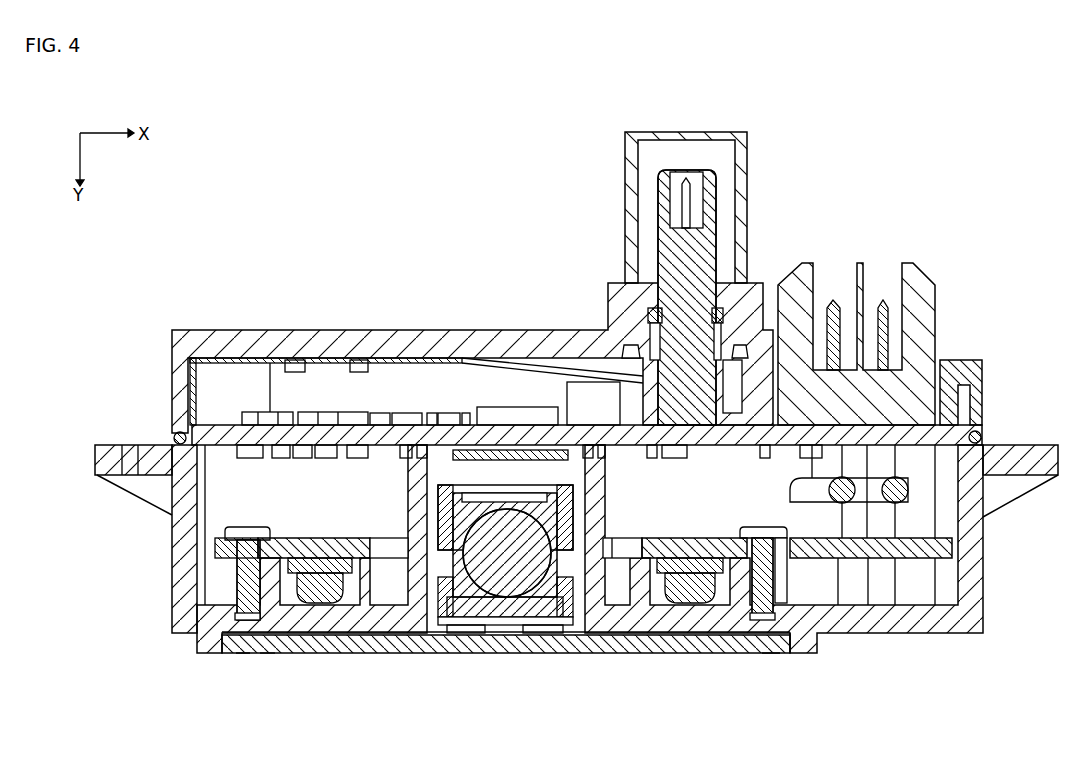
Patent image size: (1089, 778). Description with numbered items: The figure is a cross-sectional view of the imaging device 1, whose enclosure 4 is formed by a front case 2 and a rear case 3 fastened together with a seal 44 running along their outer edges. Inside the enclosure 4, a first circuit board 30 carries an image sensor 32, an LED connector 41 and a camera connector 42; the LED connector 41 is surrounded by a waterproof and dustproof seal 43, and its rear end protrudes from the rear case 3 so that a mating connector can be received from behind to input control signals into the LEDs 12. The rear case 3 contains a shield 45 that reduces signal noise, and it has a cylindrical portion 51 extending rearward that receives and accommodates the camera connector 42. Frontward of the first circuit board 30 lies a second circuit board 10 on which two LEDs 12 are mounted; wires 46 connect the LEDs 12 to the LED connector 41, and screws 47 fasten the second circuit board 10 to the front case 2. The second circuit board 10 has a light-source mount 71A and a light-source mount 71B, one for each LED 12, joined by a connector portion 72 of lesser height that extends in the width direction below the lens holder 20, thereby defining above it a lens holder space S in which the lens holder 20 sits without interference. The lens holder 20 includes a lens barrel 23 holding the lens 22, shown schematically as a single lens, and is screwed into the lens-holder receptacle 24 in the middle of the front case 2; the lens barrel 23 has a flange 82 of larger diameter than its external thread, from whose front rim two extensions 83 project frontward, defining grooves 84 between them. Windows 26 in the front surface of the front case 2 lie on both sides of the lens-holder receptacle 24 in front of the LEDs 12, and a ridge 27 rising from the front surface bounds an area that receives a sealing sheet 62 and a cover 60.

The imaging device 1 is at (320, 188).
The front case 2 is at (153, 526).
The rear case 3 is at (152, 381).
The enclosure 4 is at (70, 402).
The second circuit board 10 is at (920, 556).
The light-emitting diode (LED) 12 is at (325, 600).
The lens holder 20 is at (576, 616).
The lens 22 is at (515, 604).
The lens barrel 23 is at (562, 500).
The lens-holder receptacle 24 is at (420, 620).
The window 26 is at (358, 645).
The ridge 27 is at (797, 646).
The first circuit board 30 is at (347, 430).
The image sensor 32 is at (515, 443).
The LED connector 41 is at (917, 307).
The camera connector 42 is at (695, 243).
The seal 43 is at (962, 408).
The seal 44 is at (214, 405).
The shield 45 is at (390, 356).
The wire 46 is at (902, 490).
The screw 47 is at (252, 527).
The cylindrical portion 51 is at (633, 185).
The cover 60 is at (268, 655).
The sealing sheet 62 is at (243, 650).
The light-source mount 71A is at (320, 538).
The light-source mount 71B is at (692, 538).
The connector portion 72 is at (625, 547).
The flange 82 is at (450, 612).
The extension 83 is at (467, 618).
The groove 84 is at (500, 625).
The lens holder space S is at (390, 548).